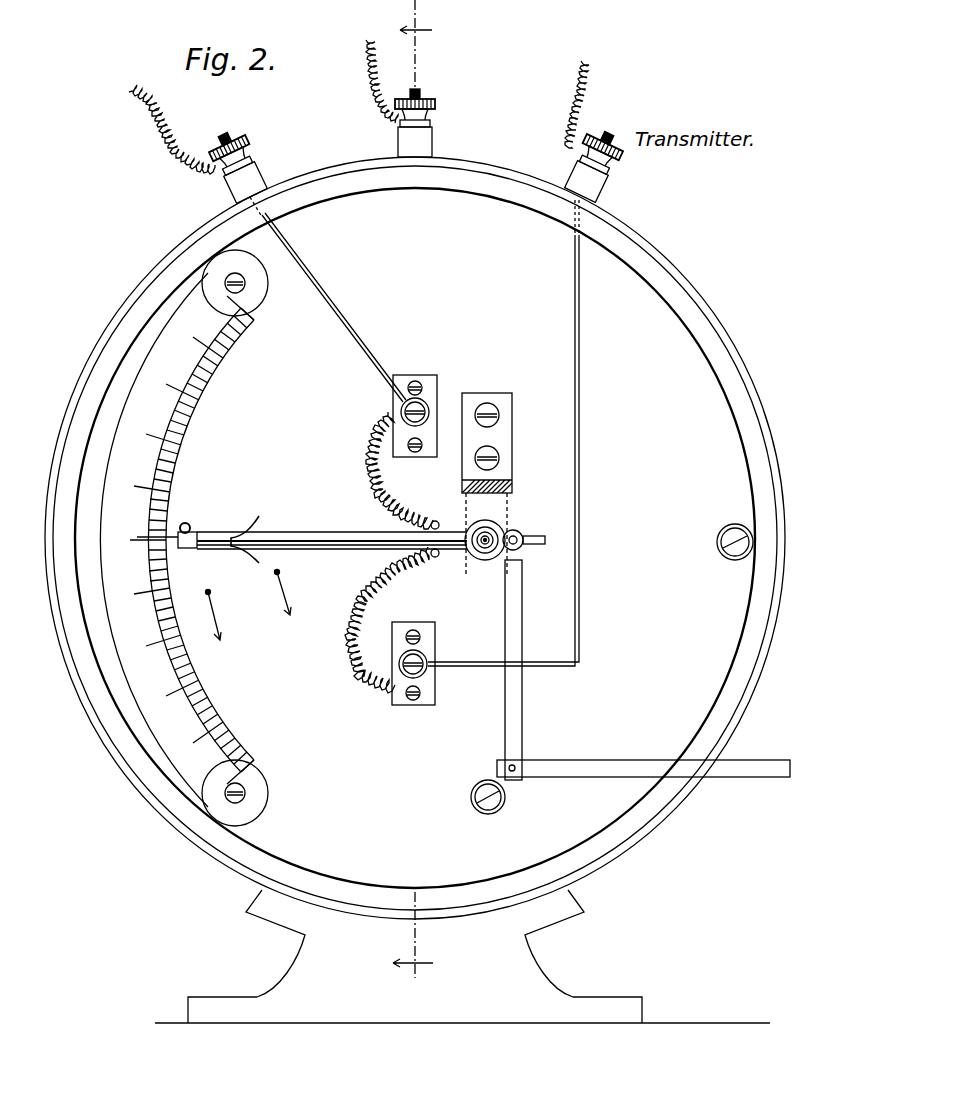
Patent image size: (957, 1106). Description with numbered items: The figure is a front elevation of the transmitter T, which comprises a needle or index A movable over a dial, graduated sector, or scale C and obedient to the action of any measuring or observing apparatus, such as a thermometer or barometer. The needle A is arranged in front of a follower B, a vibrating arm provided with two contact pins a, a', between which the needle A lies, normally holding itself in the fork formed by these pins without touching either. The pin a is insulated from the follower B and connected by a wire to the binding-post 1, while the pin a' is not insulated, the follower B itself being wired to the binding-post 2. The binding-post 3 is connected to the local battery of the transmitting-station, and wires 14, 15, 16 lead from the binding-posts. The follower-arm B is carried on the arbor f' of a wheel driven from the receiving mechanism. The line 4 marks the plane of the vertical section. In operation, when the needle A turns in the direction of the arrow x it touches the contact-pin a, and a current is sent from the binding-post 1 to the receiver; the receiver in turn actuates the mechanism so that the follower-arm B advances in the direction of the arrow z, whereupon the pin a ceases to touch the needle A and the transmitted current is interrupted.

The binding-post 1 is at (533, 395).
The binding-post 2 is at (302, 251).
The binding-post 3 is at (424, 123).
The section line 4 is at (413, 503).
The conductor wire 14 is at (374, 74).
The conductor wire 15 is at (572, 104).
The conductor wire 16 is at (158, 129).
The needle A is at (245, 558).
The follower B is at (330, 532).
The scale C is at (184, 538).
The transmitter T is at (415, 590).
The contact-pin a is at (167, 557).
The contact-pin a' is at (197, 519).
The arrow x is at (219, 615).
The arrow z is at (286, 593).
The arbor f' is at (524, 523).